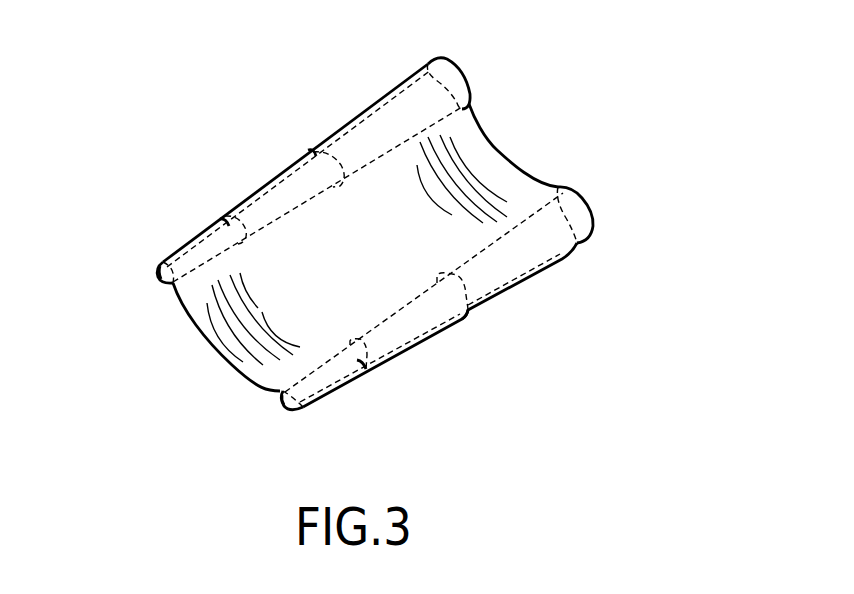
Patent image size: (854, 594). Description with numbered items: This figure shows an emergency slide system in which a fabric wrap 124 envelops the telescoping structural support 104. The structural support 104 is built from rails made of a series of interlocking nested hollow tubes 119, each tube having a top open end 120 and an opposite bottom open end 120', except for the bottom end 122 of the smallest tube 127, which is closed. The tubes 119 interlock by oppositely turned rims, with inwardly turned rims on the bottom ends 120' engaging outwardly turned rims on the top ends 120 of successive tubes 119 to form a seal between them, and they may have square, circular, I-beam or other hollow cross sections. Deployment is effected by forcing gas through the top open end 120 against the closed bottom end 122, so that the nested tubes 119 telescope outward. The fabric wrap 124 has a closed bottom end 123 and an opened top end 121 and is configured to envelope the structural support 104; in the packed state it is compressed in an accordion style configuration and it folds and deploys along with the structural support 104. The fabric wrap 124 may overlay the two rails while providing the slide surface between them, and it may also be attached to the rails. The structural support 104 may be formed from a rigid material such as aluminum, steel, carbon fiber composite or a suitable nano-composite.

The telescoping structural support 104 is at (315, 364).
The interlocking nested hollow tubes 119 is at (391, 116).
The top open end 120 is at (429, 212).
The bottom open end 120' is at (378, 225).
The opened top end 121 is at (520, 168).
The closed bottom end 122 is at (165, 281).
The closed bottom end of fabric wrap 123 is at (200, 334).
The fabric wrap 124 is at (548, 266).
The smallest tube 127 is at (188, 245).